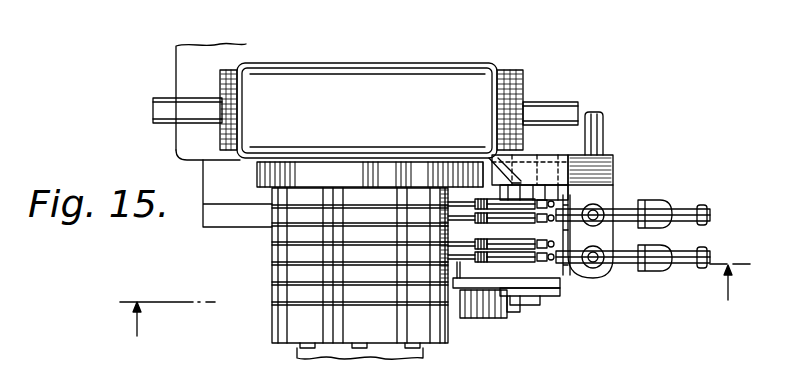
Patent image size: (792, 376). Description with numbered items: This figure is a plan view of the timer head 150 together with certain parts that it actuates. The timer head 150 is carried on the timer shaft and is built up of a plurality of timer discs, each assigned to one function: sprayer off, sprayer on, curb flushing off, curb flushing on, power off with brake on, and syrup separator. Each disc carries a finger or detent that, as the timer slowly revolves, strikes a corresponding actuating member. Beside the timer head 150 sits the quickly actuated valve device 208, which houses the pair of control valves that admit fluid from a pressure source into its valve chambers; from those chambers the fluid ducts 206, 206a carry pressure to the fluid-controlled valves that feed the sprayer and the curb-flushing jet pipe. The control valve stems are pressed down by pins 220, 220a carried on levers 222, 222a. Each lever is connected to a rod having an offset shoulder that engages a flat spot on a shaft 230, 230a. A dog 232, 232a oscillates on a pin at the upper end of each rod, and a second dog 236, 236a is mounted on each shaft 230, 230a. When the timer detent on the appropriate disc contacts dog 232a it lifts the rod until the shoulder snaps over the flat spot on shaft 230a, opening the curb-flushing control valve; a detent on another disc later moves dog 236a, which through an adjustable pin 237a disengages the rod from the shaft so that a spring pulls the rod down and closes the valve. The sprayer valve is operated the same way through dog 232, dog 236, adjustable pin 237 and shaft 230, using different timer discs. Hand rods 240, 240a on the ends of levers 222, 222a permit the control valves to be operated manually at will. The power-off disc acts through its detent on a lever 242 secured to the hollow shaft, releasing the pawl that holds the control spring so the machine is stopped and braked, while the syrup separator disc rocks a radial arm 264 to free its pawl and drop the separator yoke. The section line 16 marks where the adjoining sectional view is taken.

The section line 16 is at (435, 313).
The timer head 150 is at (282, 332).
The lever 242 is at (447, 284).
The shaft 230 is at (515, 196).
The dog 232 is at (505, 213).
The second dog 236 is at (478, 200).
The second dog 236a is at (493, 252).
The adjustable pin 237 is at (552, 182).
The adjustable pin 237a is at (547, 278).
The pin 220 is at (605, 185).
The pin 220a is at (610, 250).
The lever 222 is at (575, 212).
The lever 222a is at (582, 279).
The valve device 208 is at (603, 240).
The fluid duct 206 is at (657, 202).
The fluid duct 206a is at (645, 267).
The hand rod 240 is at (712, 222).
The hand rod 240a is at (703, 272).
The radial arm 264 is at (457, 318).
The shaft 230a is at (528, 296).
The dog 232a is at (508, 318).